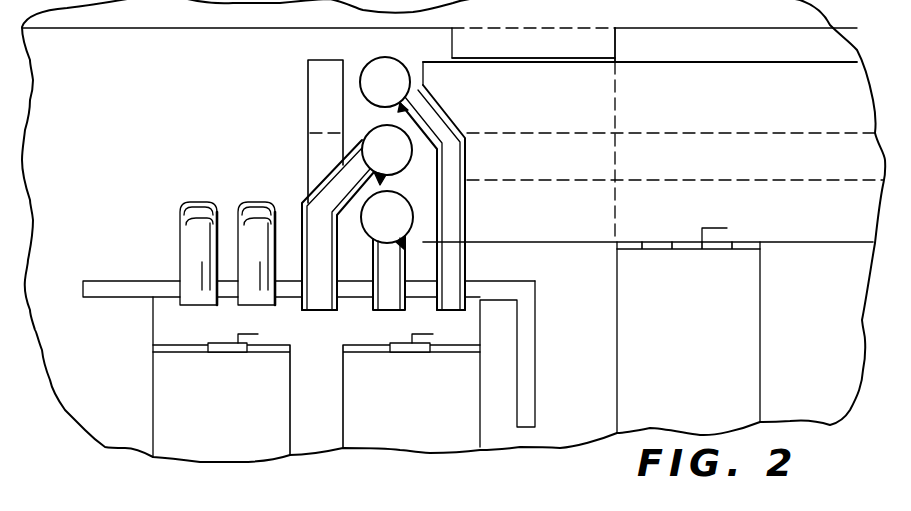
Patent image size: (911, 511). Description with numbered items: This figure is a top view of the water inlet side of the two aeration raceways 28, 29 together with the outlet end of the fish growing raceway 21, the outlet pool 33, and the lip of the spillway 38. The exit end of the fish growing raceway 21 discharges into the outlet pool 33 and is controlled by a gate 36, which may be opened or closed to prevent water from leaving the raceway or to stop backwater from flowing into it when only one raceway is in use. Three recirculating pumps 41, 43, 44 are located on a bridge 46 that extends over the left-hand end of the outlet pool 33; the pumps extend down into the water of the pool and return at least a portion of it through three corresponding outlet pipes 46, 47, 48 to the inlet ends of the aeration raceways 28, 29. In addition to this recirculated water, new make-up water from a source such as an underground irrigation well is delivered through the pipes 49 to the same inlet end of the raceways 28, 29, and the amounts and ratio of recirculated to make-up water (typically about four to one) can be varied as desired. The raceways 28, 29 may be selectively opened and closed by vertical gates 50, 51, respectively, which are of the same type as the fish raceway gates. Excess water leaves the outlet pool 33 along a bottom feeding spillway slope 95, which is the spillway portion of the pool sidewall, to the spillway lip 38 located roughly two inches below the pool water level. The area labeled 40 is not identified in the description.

The fish growing raceway 21 is at (680, 375).
The aeration raceway 28 is at (228, 429).
The aeration raceway 29 is at (408, 430).
The outlet pool 33 is at (793, 173).
The gate 36 is at (698, 252).
The spillway lip 38 is at (527, 56).
The cover 40 is at (778, 18).
The recirculating pump 41 is at (405, 56).
The recirculating pump 43 is at (362, 137).
The recirculating pump 44 is at (413, 215).
The bridge 46 is at (357, 125).
The outlet pipe 47 is at (387, 311).
The outlet pipe 48 is at (441, 311).
The make-up water pipes 49 is at (250, 201).
The vertical gate 50 is at (181, 352).
The vertical gate 51 is at (453, 352).
The spillway slope 95 is at (608, 97).